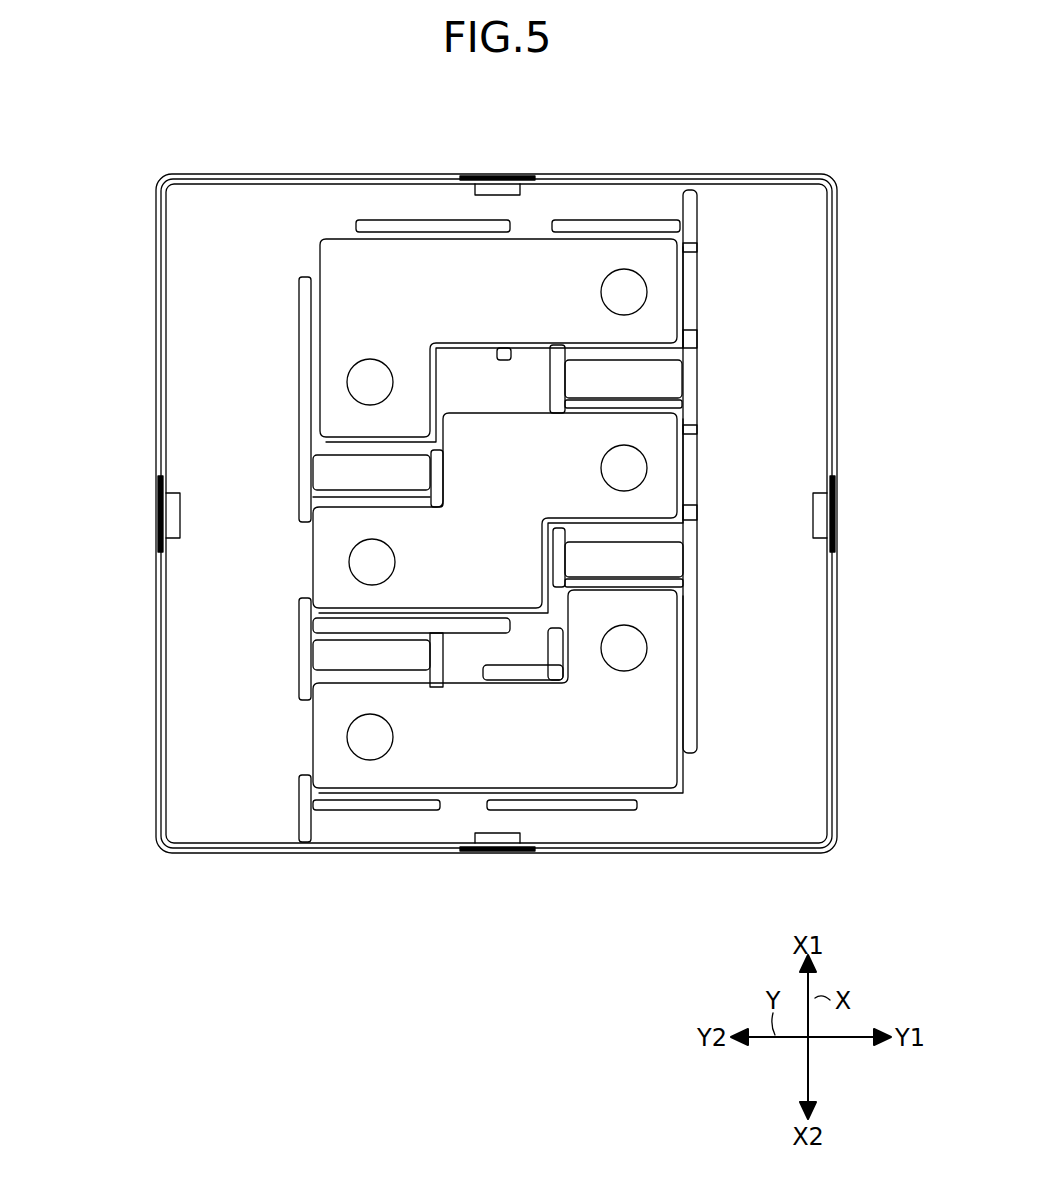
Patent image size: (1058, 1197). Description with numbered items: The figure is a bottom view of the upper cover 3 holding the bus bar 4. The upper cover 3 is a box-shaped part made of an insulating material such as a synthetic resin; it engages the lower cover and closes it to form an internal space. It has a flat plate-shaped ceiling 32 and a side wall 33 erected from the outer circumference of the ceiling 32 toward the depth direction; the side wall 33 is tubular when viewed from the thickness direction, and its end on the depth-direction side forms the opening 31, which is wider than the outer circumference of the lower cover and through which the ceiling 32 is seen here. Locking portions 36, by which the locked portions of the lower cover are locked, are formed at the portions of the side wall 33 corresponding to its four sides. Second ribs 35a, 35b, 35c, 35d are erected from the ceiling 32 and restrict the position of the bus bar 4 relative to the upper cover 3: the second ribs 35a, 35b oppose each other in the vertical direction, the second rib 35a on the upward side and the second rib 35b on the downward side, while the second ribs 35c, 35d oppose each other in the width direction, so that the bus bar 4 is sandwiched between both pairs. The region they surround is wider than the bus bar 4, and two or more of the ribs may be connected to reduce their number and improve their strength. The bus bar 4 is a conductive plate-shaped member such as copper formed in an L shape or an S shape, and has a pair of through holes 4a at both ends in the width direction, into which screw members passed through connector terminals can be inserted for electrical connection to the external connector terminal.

The upper cover 3 is at (256, 134).
The bus bar 4 is at (340, 256).
The through hole 4a is at (623, 275).
The opening 31 is at (832, 264).
The ceiling 32 is at (800, 378).
The side wall 33 is at (838, 330).
The second rib 35a is at (400, 228).
The second rib 35b is at (553, 390).
The second rib 35c is at (500, 356).
The second rib 35d is at (437, 472).
The locking portion 36 is at (500, 190).